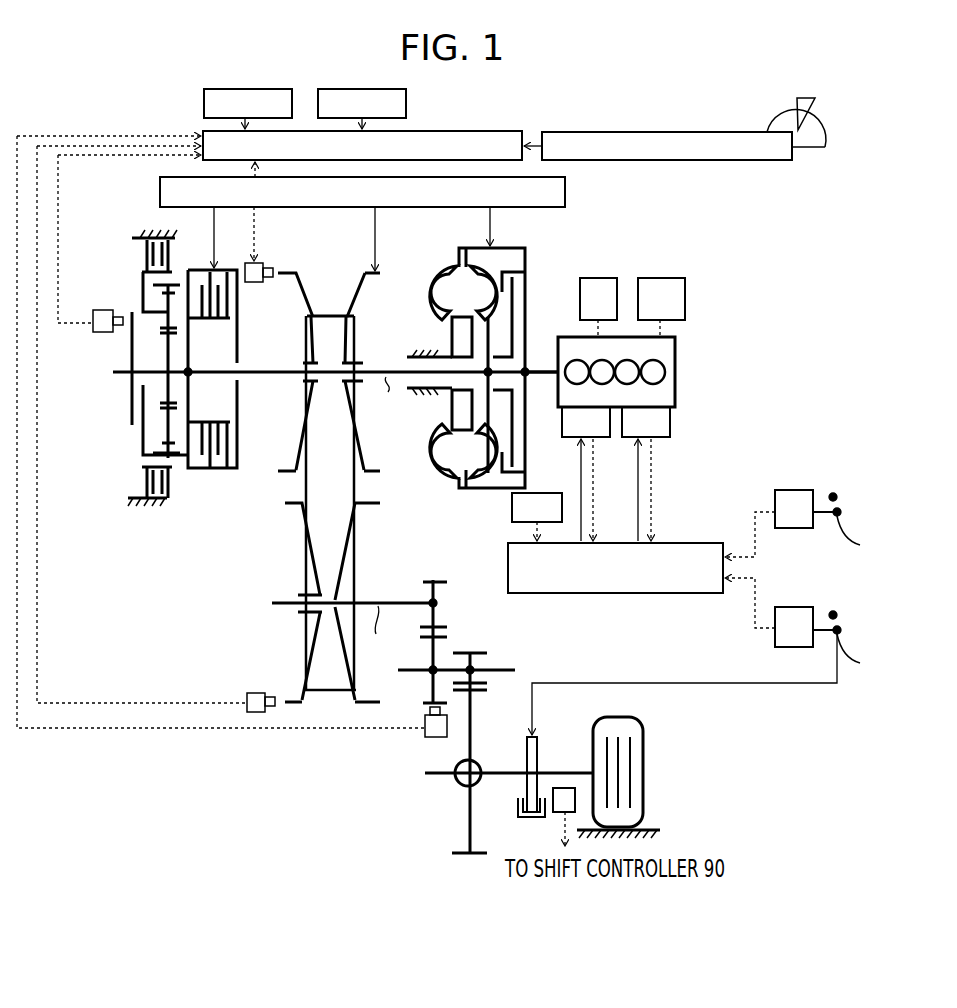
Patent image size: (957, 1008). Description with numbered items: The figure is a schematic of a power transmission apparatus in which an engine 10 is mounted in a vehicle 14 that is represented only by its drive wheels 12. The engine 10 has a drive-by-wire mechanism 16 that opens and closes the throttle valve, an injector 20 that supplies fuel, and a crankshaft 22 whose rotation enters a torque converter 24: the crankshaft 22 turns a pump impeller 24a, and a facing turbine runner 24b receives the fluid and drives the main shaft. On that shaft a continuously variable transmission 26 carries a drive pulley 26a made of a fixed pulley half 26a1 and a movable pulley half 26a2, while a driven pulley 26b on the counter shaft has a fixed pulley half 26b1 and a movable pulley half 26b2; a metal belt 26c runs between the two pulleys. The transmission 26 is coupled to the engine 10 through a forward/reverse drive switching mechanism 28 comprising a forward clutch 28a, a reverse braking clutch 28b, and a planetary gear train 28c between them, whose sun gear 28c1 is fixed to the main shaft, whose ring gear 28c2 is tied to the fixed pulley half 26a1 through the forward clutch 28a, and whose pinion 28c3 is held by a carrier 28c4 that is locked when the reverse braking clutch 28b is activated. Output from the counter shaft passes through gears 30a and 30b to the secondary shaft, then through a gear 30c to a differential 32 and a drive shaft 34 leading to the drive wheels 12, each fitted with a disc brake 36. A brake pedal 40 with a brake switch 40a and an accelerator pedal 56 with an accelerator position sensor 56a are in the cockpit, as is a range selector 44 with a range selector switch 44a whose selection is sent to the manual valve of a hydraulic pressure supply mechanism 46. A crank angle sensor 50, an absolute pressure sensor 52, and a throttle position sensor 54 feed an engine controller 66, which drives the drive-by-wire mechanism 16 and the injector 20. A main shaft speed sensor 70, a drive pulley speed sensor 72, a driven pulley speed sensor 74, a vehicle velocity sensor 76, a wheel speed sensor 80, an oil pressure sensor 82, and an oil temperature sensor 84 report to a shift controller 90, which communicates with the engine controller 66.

The engine 10 is at (677, 371).
The drive wheels 12 is at (645, 757).
The vehicle 14 is at (902, 203).
The drive-by-wire (DBW) mechanism 16 is at (569, 438).
The injector 20 is at (663, 438).
The crankshaft 22 is at (537, 360).
The torque converter 24 is at (450, 238).
The pump impeller 24a is at (442, 274).
The turbine runner 24b is at (464, 491).
The continuously variable transmission (CVT) 26 is at (385, 468).
The drive pulley 26a is at (370, 404).
The fixed pulley half 26a1 is at (298, 287).
The movable pulley half 26a2 is at (358, 292).
The driven pulley 26b is at (278, 583).
The fixed pulley half 26b1 is at (367, 506).
The movable pulley half 26b2 is at (292, 506).
The metal belt 26c is at (302, 490).
The forward/reverse drive switching mechanism 28 is at (122, 230).
The forward clutch 28a is at (213, 318).
The reverse braking clutch 28b is at (140, 262).
The planetary gear train 28c is at (140, 363).
The sun gear 28c1 is at (168, 395).
The ring gear 28c2 is at (206, 470).
The pinion 28c3 is at (160, 441).
The carrier 28c4 is at (143, 458).
The gear 30a is at (437, 580).
The gear 30b is at (425, 688).
The gear 30c is at (478, 653).
The differential 32 is at (458, 786).
The drive shaft 34 is at (557, 772).
The disc brake 36 is at (525, 798).
The brake pedal 40 is at (863, 665).
The brake switch 40a is at (796, 607).
The range selector 44 is at (806, 100).
The range selector switch 44a is at (590, 132).
The hydraulic pressure supply mechanism 46 is at (565, 190).
The crank angle sensor 50 is at (598, 278).
The absolute pressure sensor 52 is at (660, 278).
The throttle position sensor 54 is at (512, 507).
The accelerator pedal 56 is at (863, 547).
The accelerator position sensor 56a is at (796, 490).
The engine controller 66 is at (698, 543).
The NT sensor 70 is at (103, 310).
The NDR sensor 72 is at (258, 262).
The NDN sensor 74 is at (246, 700).
The V sensor 76 is at (432, 740).
The wheel speed sensor 80 is at (542, 815).
The oil pressure sensor 82 is at (203, 100).
The oil temperature sensor 84 is at (407, 100).
The shift controller 90 is at (480, 131).